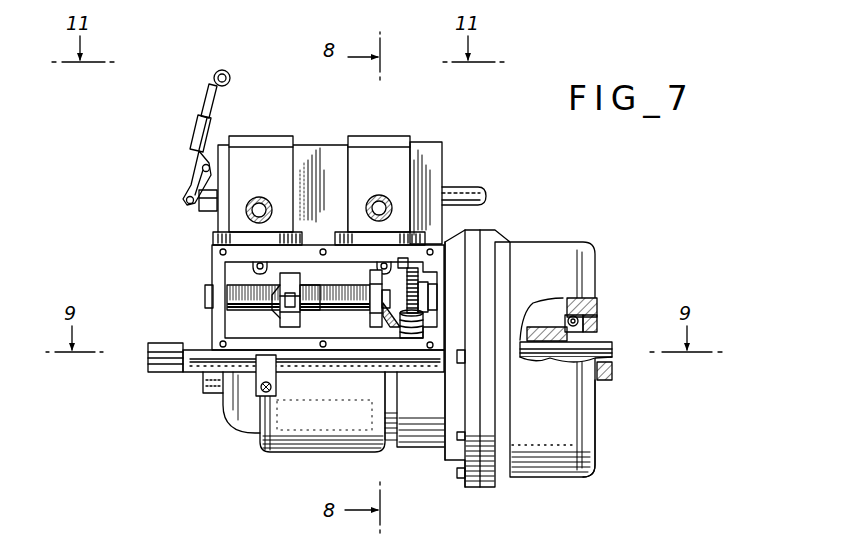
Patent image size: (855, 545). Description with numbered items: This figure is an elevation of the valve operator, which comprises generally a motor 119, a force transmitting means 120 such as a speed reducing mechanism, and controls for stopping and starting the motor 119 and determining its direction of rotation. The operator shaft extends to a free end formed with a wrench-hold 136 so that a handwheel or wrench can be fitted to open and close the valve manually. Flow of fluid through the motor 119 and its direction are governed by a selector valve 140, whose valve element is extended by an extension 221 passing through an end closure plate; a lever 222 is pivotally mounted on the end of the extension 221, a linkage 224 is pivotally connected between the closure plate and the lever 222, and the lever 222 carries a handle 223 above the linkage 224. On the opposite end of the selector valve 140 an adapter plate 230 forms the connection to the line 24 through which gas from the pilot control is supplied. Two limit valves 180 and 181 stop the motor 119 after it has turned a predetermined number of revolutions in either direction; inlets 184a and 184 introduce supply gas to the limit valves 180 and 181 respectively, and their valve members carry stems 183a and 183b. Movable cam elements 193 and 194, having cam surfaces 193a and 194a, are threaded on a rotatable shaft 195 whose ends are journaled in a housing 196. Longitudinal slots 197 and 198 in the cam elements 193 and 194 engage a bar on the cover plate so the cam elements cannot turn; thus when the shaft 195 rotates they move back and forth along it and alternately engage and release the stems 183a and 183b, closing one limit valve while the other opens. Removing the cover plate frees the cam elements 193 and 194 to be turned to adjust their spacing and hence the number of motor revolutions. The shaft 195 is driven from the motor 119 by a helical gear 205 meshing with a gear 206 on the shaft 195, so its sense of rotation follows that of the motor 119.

The line 24 is at (463, 185).
The motor 119 is at (235, 421).
The force transmitting means 120 is at (546, 478).
The wrench-hold 136 is at (164, 342).
The selector valve 140 is at (321, 145).
The limit valve 180 is at (259, 134).
The limit valve 181 is at (373, 135).
The stem 183a is at (256, 264).
The stem 183b is at (377, 265).
The inlet 184 is at (378, 195).
The inlet 184a is at (258, 197).
The movable element 193 is at (308, 325).
The cam surface 193a is at (283, 316).
The movable element 194 is at (370, 312).
The cam surface 194a is at (406, 259).
The rotatable shaft 195 is at (245, 283).
The housing 196 is at (209, 308).
The longitudinal slot 197 is at (296, 322).
The longitudinal slot 198 is at (411, 262).
The helical gear 205 is at (412, 340).
The gear 206 is at (397, 295).
The extension 221 is at (211, 212).
The lever 222 is at (183, 194).
The handle 223 is at (213, 78).
The linkage 224 is at (196, 168).
The adapter plate 230 is at (432, 144).